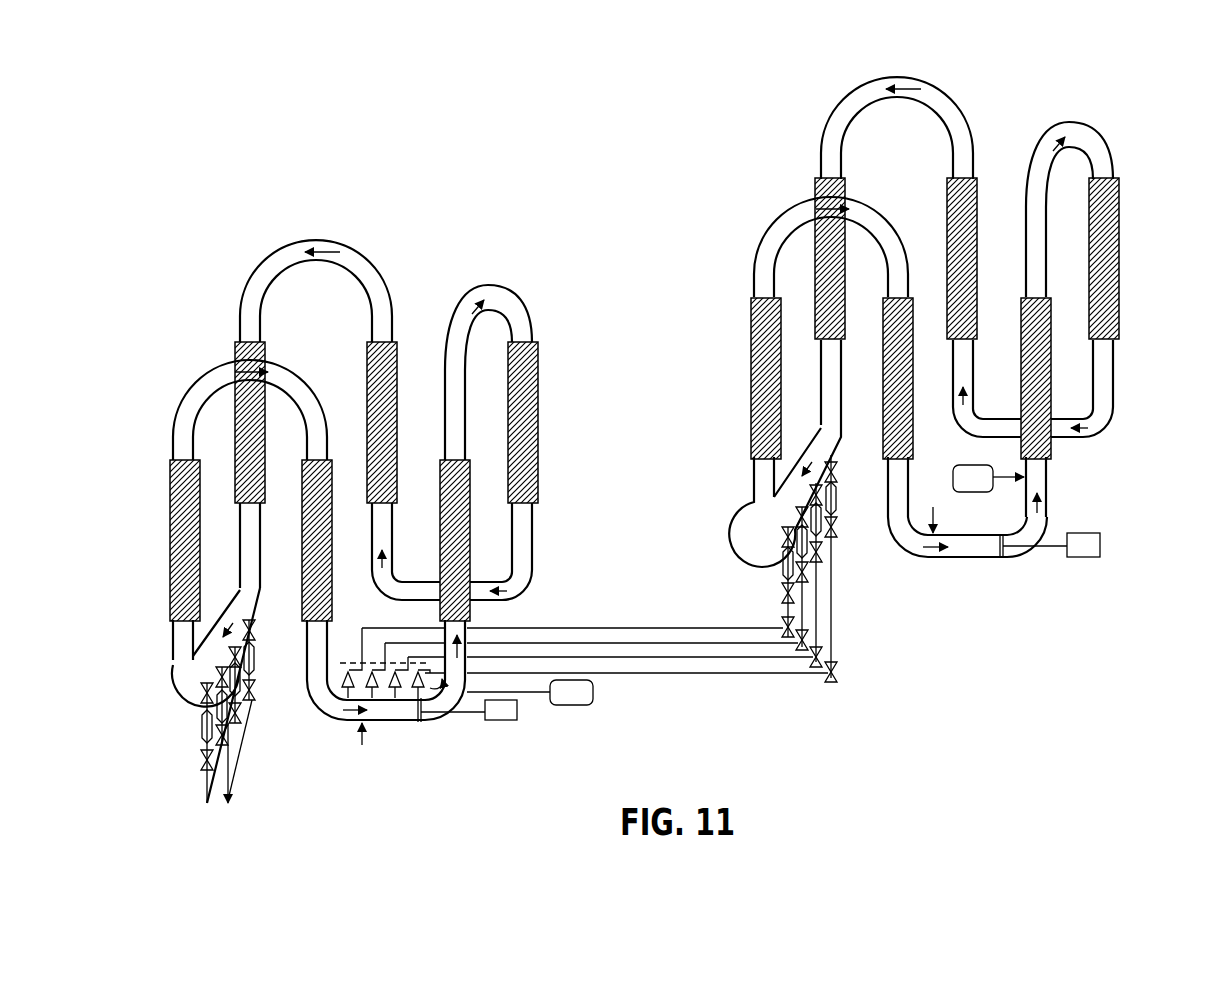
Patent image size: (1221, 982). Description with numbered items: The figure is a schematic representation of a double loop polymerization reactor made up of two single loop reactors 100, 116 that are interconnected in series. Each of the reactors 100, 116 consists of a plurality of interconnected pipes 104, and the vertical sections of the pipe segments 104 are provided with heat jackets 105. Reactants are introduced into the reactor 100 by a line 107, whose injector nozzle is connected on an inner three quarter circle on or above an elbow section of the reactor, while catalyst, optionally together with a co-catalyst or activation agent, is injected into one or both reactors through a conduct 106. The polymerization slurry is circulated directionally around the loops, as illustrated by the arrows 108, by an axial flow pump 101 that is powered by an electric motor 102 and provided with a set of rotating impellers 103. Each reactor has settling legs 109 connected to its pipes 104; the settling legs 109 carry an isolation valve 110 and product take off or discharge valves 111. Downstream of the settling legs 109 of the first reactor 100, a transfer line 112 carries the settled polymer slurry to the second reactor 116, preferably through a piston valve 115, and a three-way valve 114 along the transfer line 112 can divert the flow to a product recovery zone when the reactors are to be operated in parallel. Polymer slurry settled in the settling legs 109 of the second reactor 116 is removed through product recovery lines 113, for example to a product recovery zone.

The single loop reactor 100 is at (1160, 150).
The axial flow pump 101 is at (442, 722).
The electric motor 102 is at (499, 722).
The set of rotating impellers 103 is at (416, 724).
The interconnected pipes 104 is at (537, 545).
The heat jackets 105 is at (538, 432).
The conduct 106 is at (647, 628).
The line 107 is at (545, 706).
The arrows 108 is at (470, 320).
The settling legs 109 is at (201, 725).
The isolation valve 110 is at (253, 630).
The product take off or discharge valves 111 is at (253, 697).
The transfer line 112 is at (623, 627).
The product recovery lines 113 is at (234, 766).
The three-way valve 114 is at (837, 677).
The piston valve 115 is at (350, 670).
The single loop reactor 116 is at (577, 305).